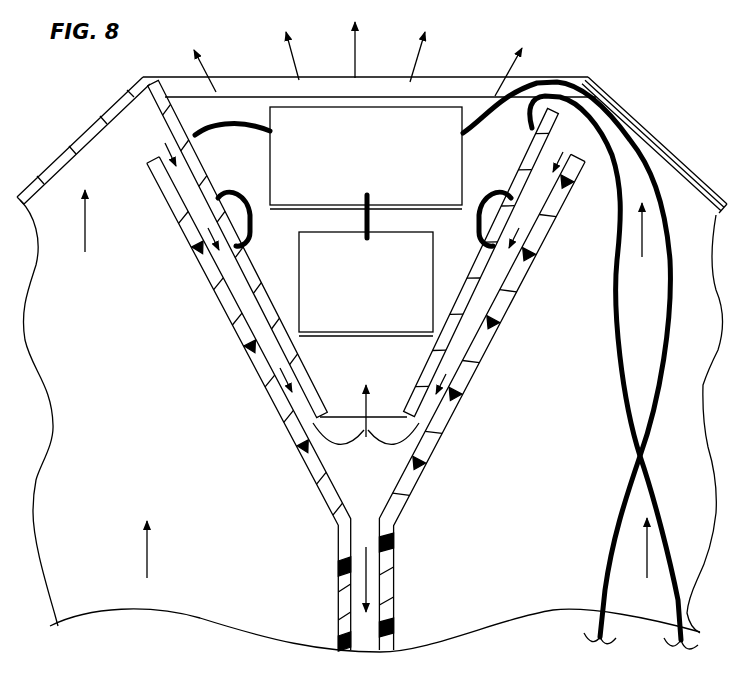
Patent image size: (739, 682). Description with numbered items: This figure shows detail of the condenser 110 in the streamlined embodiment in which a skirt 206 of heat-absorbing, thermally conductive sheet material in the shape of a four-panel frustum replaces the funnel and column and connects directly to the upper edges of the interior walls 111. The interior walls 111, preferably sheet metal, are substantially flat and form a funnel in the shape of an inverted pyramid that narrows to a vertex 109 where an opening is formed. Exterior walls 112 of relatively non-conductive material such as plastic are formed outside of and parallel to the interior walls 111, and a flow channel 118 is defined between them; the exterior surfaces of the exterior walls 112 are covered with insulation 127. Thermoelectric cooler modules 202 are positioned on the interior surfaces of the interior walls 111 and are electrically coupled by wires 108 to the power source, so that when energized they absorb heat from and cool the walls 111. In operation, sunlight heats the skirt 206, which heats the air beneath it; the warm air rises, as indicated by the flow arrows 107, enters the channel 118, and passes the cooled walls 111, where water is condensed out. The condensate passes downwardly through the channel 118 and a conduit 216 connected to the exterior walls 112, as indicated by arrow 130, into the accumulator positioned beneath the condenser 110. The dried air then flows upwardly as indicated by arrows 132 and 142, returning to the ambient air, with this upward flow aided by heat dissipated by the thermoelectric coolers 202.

The air flow 107 is at (83, 242).
The wires 108 is at (600, 630).
The vertex 109 is at (322, 415).
The condenser 110 is at (216, 334).
The interior walls 111 is at (257, 247).
The exterior walls 112 is at (235, 303).
The flow channel 118 is at (500, 272).
The insulation 127 is at (160, 172).
The arrow 130 is at (358, 553).
The arrows 132 is at (366, 405).
The arrows 142 is at (288, 72).
The thermoelectric cooler 202 is at (387, 139).
The skirt 206 is at (113, 102).
The conduit 216 is at (387, 602).